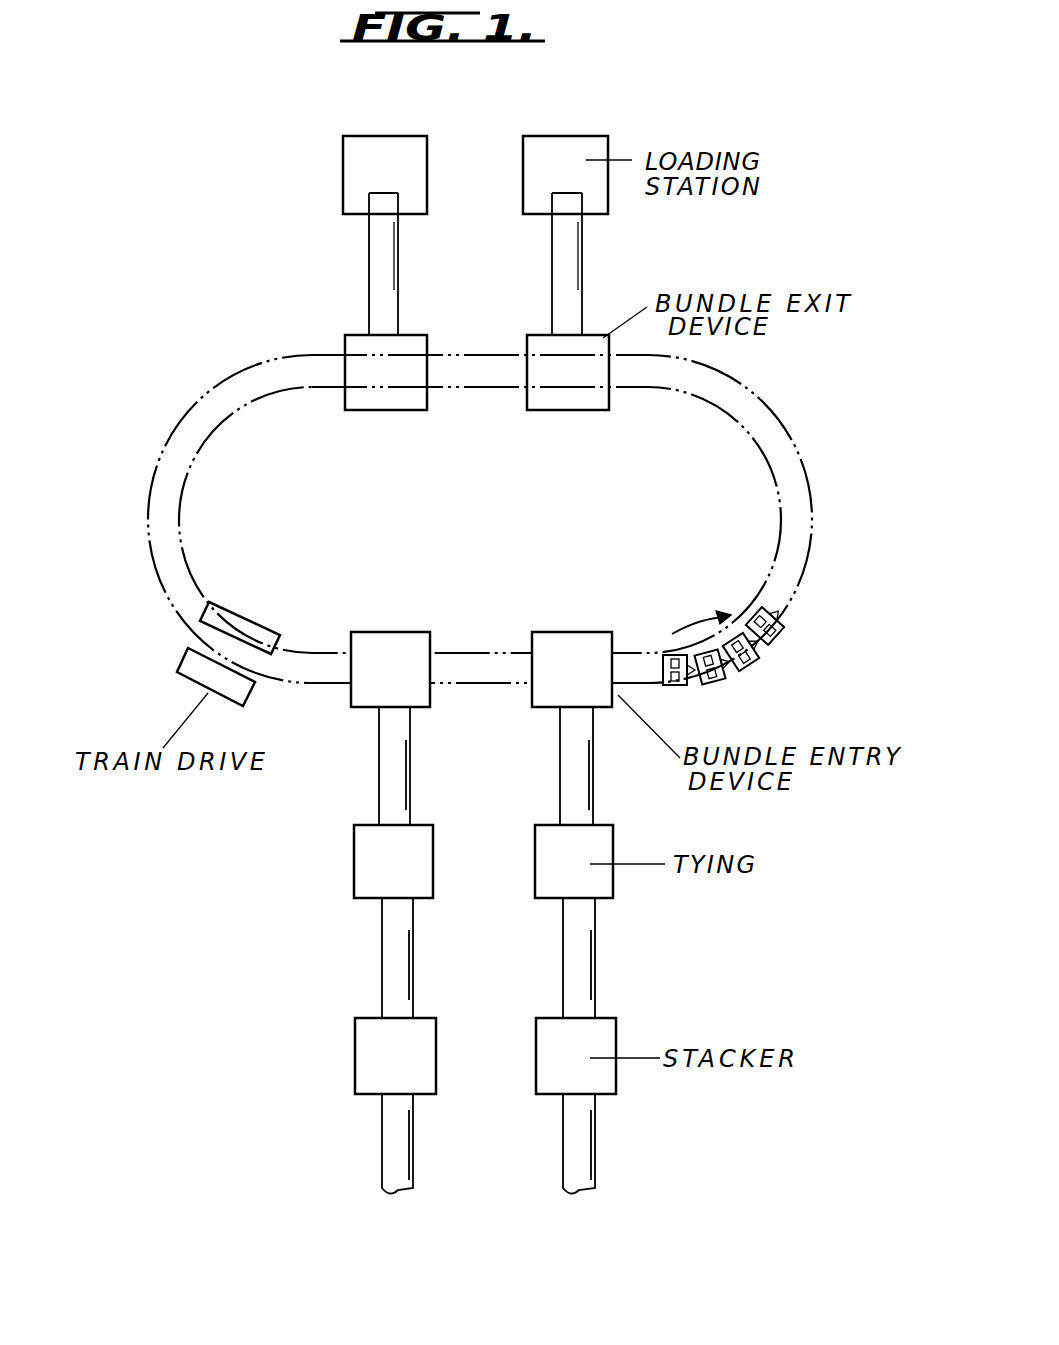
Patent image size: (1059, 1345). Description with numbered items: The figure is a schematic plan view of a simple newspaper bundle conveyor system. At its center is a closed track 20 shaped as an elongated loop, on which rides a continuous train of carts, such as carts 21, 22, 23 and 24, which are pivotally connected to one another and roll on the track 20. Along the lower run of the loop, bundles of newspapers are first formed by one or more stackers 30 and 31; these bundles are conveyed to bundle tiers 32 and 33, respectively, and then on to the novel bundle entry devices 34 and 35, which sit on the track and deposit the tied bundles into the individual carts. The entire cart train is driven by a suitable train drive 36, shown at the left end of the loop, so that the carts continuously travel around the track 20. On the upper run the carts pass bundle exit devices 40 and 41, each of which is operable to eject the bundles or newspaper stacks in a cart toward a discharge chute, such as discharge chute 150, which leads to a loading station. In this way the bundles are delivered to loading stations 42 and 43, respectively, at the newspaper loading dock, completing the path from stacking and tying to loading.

The closed track 20 is at (180, 530).
The cart 21 is at (675, 688).
The cart 22 is at (720, 685).
The cart 23 is at (758, 662).
The cart 24 is at (785, 636).
The stacker 30 is at (355, 1057).
The stacker 31 is at (536, 1057).
The bundle tier 32 is at (354, 865).
The bundle tier 33 is at (535, 865).
The bundle entry device 34 is at (405, 632).
The bundle entry device 35 is at (590, 632).
The train drive 36 is at (255, 620).
The bundle exit device 40 is at (383, 410).
The bundle exit device 41 is at (560, 410).
The loading station 42 is at (410, 114).
The loading station 43 is at (592, 114).
The discharge chute 150 is at (369, 258).